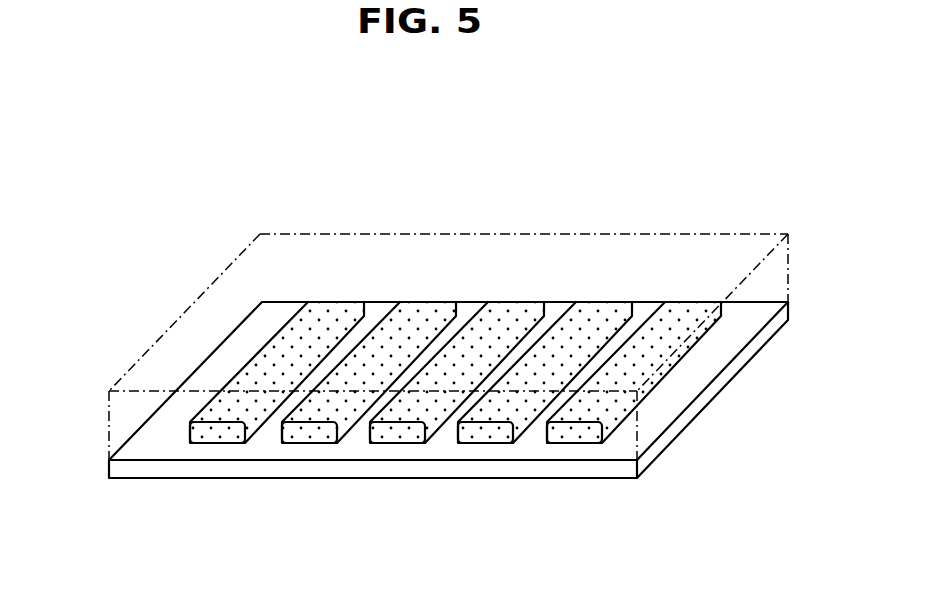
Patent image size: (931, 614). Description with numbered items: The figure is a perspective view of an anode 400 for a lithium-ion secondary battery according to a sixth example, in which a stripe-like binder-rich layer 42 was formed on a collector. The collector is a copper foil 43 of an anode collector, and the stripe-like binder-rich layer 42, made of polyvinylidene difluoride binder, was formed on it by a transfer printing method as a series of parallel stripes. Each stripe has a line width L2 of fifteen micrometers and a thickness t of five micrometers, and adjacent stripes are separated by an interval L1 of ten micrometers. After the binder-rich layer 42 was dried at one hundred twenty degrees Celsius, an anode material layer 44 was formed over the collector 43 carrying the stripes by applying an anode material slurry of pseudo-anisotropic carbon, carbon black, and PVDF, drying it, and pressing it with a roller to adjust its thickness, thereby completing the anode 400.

The anode 400 is at (531, 185).
The stripe-like binder-rich layer 42 is at (328, 308).
The copper foil of anode collector 43 is at (467, 466).
The anode material layer 44 is at (682, 232).
The thickness of binder-rich layer t is at (190, 423).
The interval between stripes L1 is at (282, 443).
The line width of binder-rich layer L2 is at (245, 443).